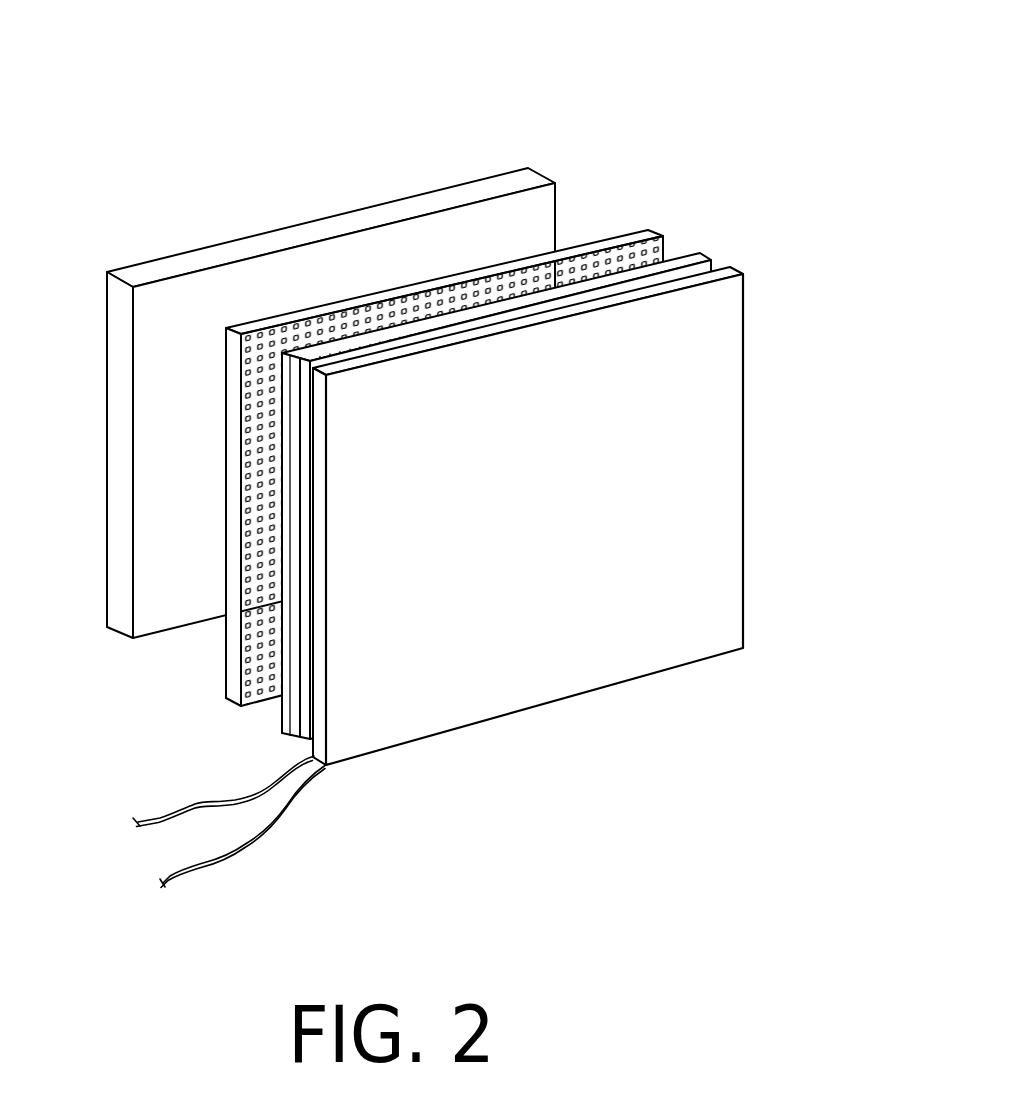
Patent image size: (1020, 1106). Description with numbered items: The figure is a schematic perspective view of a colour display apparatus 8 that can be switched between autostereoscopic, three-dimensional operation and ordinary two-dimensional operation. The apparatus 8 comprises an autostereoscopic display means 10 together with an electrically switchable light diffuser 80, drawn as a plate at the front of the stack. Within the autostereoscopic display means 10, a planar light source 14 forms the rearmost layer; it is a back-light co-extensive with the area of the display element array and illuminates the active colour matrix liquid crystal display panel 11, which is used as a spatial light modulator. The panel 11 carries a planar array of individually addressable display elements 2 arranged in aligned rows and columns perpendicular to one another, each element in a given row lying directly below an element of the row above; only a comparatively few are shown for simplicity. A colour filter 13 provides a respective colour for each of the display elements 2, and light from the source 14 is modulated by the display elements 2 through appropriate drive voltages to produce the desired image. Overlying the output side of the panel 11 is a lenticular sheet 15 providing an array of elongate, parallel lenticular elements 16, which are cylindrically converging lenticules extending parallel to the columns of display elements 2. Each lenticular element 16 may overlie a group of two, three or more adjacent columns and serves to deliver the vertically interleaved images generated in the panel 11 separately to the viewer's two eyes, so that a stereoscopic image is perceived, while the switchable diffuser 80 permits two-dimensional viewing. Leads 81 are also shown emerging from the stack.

The colour display apparatus 8 is at (712, 96).
The autostereoscopic display means 10 is at (288, 746).
The light source 14 is at (453, 187).
The active colour matrix liquid crystal display panel 11 is at (597, 241).
The colour filter 13 is at (250, 438).
The individually addressable display elements 2 is at (633, 243).
The lenticular sheet 15 is at (716, 259).
The lenticular elements 16 is at (300, 712).
The electrically switchable light diffuser 80 is at (744, 556).
The cables 81 is at (166, 879).